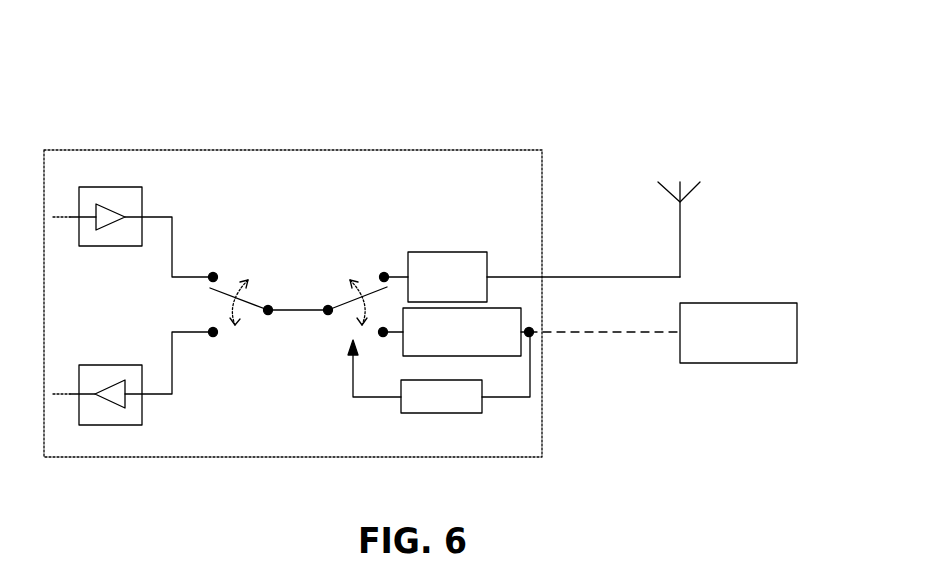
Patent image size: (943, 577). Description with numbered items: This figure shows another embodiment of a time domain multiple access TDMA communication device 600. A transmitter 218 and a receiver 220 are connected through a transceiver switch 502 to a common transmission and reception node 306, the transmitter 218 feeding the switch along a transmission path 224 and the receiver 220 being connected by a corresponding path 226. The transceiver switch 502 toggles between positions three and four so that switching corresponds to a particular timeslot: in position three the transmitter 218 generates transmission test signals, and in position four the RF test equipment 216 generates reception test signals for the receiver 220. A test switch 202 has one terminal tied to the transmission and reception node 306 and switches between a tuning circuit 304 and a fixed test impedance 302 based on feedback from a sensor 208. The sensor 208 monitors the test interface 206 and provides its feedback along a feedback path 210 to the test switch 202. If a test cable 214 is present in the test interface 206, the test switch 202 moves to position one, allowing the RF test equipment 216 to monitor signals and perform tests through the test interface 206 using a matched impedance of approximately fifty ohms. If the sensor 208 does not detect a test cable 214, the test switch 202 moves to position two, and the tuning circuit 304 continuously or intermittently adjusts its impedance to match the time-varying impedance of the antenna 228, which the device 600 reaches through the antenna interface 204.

The TDMA communication device 600 is at (290, 150).
The transmitter 218 is at (113, 187).
The receiver 220 is at (112, 425).
The transmission path 224 is at (167, 217).
The receive path 226 is at (158, 395).
The transceiver switch 502 is at (238, 337).
The transmission and reception node 306 is at (285, 308).
The test switch 202 is at (360, 262).
The tuning circuit 304 is at (448, 252).
The test impedance 302 is at (463, 356).
The sensor 208 is at (440, 413).
The feedback path 210 is at (353, 400).
The test interface 206 is at (546, 337).
The test cable 214 is at (582, 332).
The RF test equipment 216 is at (722, 303).
The antenna interface 204 is at (546, 260).
The antenna 228 is at (683, 167).